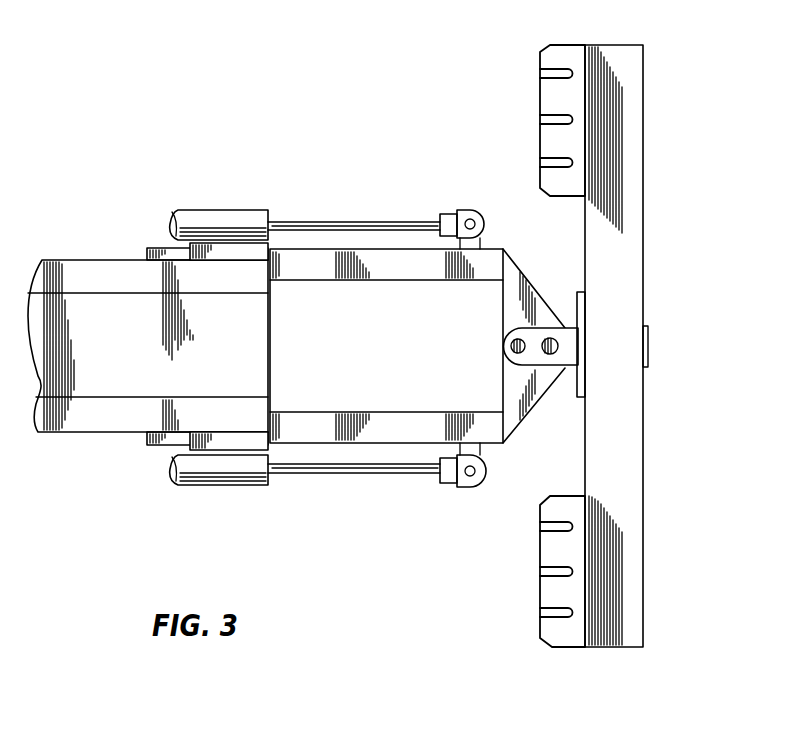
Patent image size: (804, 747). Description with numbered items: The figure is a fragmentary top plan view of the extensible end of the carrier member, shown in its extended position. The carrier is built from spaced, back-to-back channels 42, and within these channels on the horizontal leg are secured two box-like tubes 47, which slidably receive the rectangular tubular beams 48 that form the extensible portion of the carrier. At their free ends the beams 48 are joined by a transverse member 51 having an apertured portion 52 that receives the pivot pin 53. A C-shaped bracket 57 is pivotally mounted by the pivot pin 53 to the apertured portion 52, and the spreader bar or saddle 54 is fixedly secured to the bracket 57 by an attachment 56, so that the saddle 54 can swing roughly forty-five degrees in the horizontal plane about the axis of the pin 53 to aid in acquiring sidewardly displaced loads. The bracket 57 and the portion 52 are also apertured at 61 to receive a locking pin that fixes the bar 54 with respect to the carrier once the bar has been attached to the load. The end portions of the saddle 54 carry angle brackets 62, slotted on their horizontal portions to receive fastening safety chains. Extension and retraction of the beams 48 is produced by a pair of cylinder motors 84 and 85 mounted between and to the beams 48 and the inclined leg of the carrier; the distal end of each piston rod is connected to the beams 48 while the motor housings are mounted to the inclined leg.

The channels 42 is at (95, 275).
The box-like tubes 47 is at (227, 246).
The tubular beams 48 is at (396, 262).
The transverse member 51 is at (510, 282).
The apertured portion 52 is at (546, 370).
The pivot pin 53 is at (556, 347).
The spreader bar or saddle 54 is at (620, 401).
The attachment 56 is at (581, 308).
The C-shaped bracket 57 is at (565, 328).
The aperture 61 is at (513, 348).
The angle brackets 62 is at (555, 100).
The cylinder motor 84 is at (203, 222).
The cylinder motor 85 is at (245, 480).